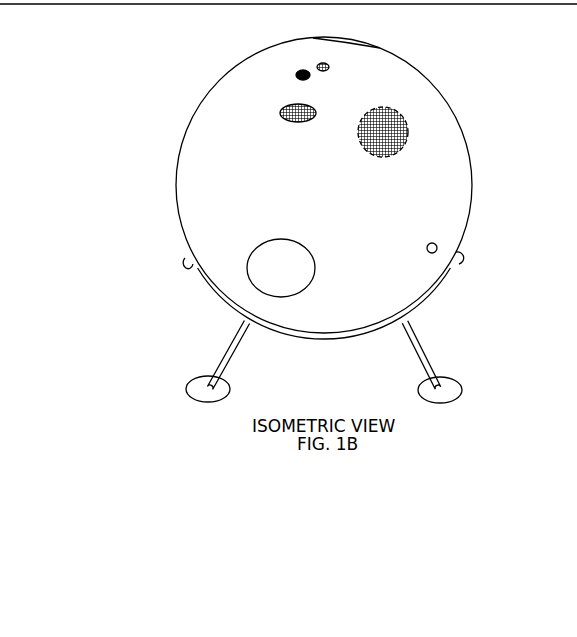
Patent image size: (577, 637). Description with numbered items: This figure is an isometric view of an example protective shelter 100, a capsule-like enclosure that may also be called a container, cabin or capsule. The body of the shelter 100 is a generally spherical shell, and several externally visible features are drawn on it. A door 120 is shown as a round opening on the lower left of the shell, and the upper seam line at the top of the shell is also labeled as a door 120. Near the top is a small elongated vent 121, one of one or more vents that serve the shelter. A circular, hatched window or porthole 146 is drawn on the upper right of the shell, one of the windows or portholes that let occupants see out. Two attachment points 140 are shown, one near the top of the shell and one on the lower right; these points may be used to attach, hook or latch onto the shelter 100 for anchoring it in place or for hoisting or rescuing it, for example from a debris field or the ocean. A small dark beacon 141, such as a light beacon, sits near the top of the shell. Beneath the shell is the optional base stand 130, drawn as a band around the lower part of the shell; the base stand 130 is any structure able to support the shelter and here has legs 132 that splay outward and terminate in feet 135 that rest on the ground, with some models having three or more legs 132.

The protective shelter 100 is at (332, 221).
The door 120 is at (397, 53).
The vent 121 is at (265, 122).
The base stand 130 is at (288, 410).
The leg 132 is at (436, 331).
The foot 135 is at (469, 371).
The attachment point 140 is at (349, 73).
The beacon 141 is at (272, 69).
The window or porthole 146 is at (424, 154).